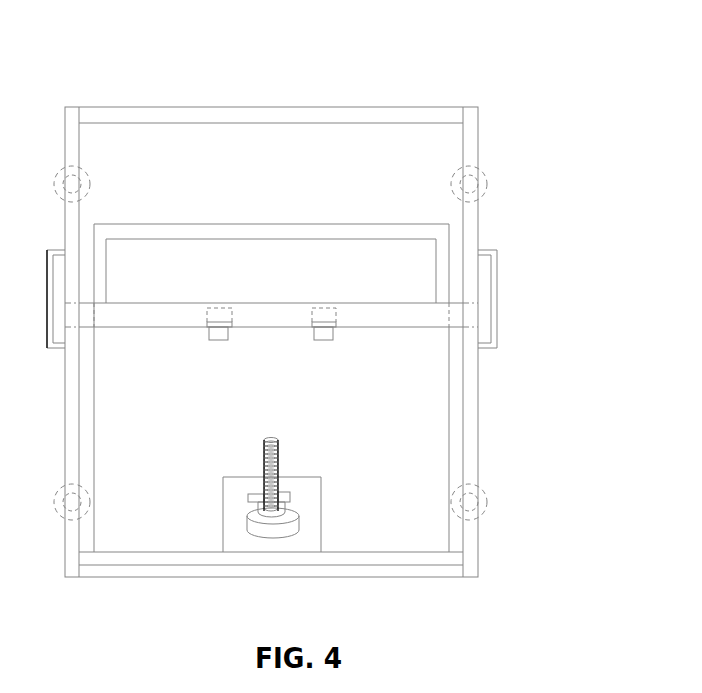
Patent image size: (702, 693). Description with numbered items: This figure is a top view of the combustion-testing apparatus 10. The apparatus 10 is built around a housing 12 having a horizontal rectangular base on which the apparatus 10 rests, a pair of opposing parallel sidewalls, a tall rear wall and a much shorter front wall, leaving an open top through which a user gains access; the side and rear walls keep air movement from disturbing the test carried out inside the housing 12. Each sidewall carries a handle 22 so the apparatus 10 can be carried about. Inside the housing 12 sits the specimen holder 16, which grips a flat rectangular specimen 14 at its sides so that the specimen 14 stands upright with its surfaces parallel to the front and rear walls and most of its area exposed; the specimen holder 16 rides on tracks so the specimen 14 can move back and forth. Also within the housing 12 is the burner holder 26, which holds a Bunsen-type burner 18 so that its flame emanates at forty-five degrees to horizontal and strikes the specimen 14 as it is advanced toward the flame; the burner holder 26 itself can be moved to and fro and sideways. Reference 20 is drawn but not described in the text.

The apparatus 10 is at (432, 30).
The housing 12 is at (220, 107).
The specimen 14 is at (315, 323).
The specimen holder 16 is at (410, 308).
The burner 18 is at (278, 463).
The mounting aperture 20 is at (487, 501).
The handle 22 is at (497, 281).
The burner holder 26 is at (240, 523).